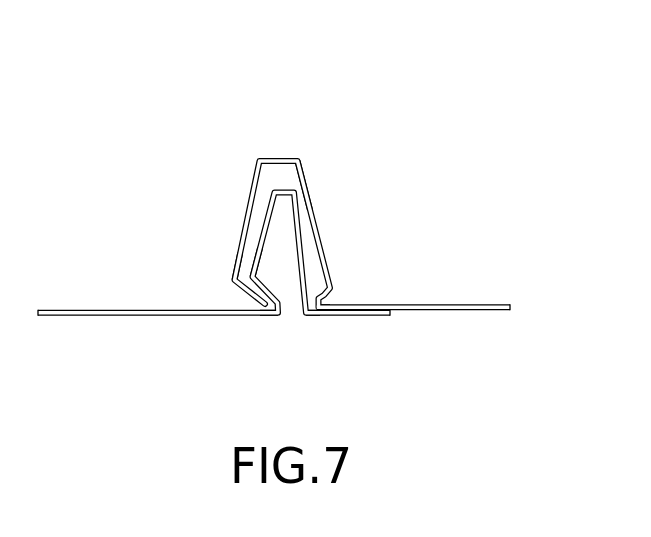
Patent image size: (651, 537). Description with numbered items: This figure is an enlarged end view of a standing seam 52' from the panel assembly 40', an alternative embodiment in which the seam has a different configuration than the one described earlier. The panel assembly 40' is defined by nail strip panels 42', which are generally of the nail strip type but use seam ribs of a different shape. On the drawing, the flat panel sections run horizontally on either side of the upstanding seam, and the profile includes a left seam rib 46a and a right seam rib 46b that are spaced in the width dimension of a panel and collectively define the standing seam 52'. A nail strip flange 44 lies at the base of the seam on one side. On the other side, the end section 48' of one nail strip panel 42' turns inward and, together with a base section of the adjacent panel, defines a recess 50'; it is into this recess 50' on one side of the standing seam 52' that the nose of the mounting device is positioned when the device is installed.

The panel assembly 40' is at (527, 132).
The nail strip panel 42' is at (274, 270).
The nail strip flange 44 is at (352, 316).
The left seam rib 46a is at (307, 187).
The right seam rib 46b is at (305, 247).
The end section 48' is at (202, 265).
The recess 50' is at (227, 314).
The standing seam 52' is at (275, 145).